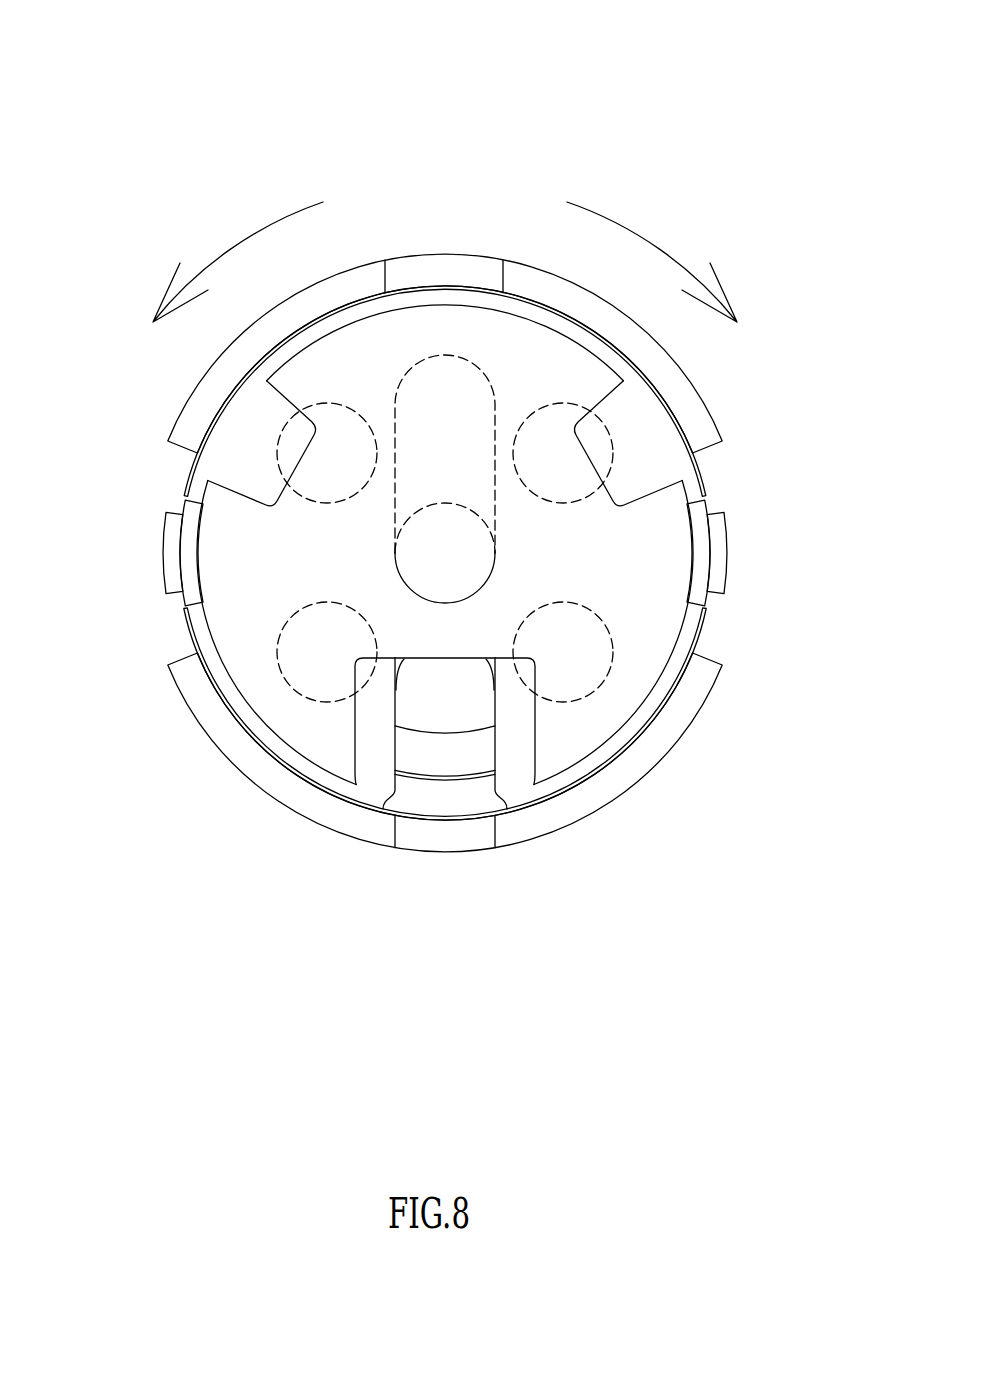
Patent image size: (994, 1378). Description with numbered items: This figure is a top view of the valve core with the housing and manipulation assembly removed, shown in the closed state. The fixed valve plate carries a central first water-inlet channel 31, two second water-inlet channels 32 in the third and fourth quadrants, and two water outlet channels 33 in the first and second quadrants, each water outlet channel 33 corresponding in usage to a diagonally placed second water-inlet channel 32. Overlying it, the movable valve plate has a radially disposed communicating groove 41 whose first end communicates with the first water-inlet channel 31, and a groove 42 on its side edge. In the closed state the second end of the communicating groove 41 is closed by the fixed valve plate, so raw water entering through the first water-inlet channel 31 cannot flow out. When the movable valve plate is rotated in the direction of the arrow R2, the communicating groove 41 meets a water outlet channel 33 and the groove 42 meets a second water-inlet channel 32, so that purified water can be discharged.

The first water-inlet channel 31 is at (443, 553).
The second water-inlet channel 32 is at (313, 653).
The water outlet channel 33 is at (327, 453).
The communicating groove 41 is at (443, 405).
The groove 42 is at (507, 710).
The arrow R2 is at (227, 248).